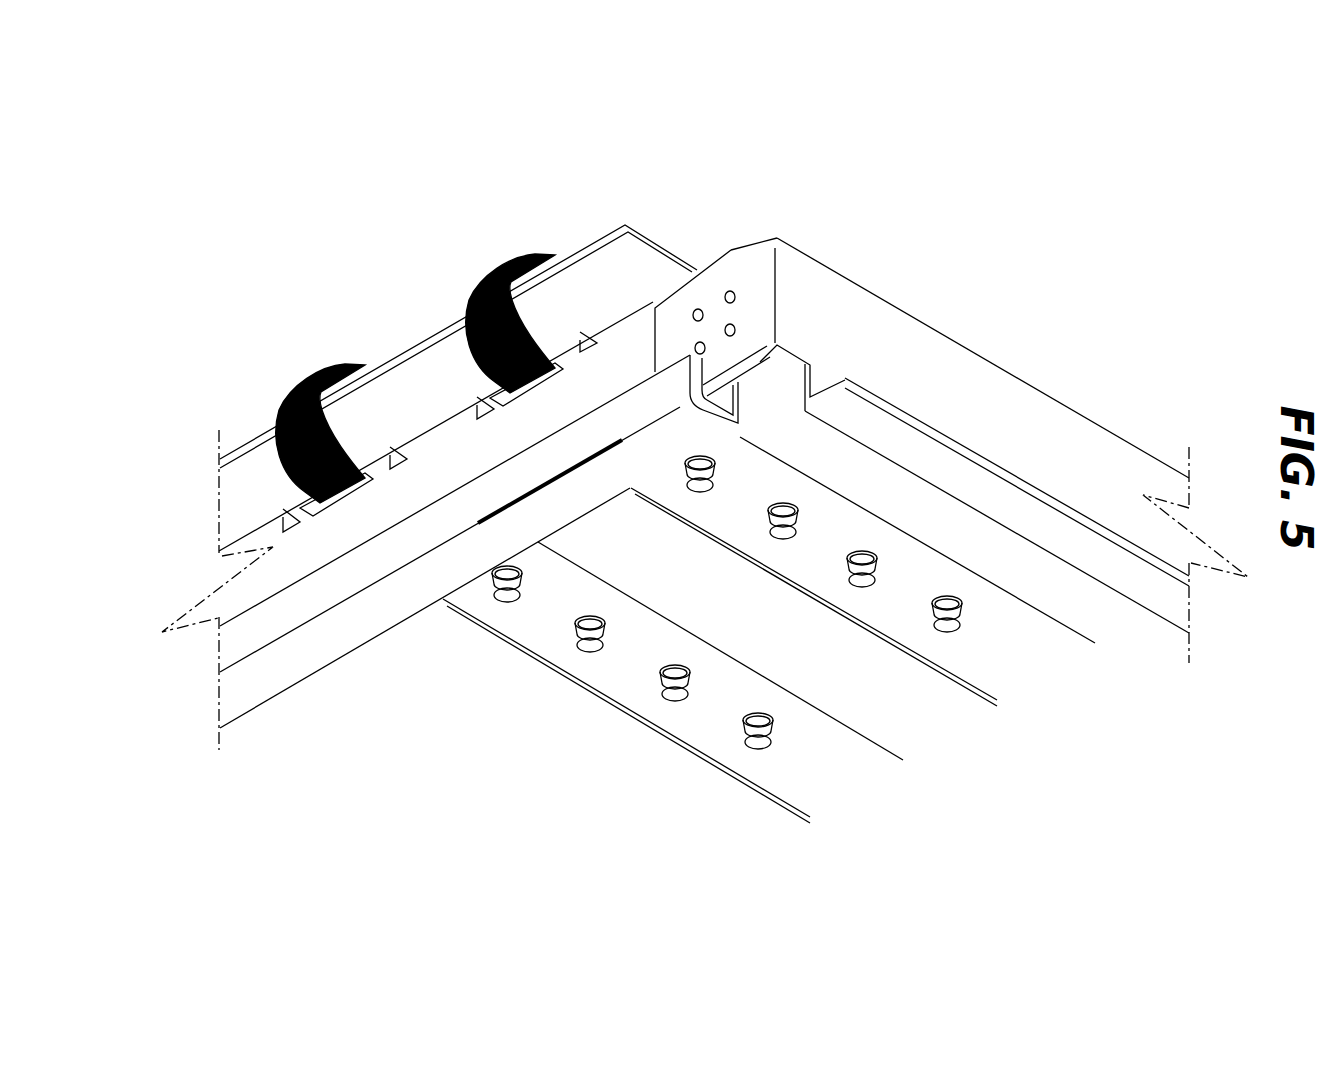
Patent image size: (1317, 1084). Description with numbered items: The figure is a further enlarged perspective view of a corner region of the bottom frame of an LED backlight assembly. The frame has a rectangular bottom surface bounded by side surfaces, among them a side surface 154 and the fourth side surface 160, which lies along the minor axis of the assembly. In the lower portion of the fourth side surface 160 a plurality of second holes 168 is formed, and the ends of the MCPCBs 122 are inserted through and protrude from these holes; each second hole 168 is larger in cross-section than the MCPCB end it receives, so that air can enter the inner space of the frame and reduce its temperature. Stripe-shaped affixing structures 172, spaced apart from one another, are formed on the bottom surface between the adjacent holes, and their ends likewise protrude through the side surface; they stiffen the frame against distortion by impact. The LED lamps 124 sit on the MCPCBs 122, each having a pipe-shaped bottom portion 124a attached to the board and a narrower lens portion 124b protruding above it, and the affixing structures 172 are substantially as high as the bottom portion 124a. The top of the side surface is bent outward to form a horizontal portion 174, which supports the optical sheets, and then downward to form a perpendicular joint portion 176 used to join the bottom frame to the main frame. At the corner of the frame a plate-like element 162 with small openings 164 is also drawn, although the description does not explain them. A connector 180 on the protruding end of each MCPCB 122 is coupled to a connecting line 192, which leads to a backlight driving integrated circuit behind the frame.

The MCPCB 122 is at (1027, 660).
The LED lamp 124 is at (739, 615).
The bottom portion 124a is at (945, 612).
The lens portion 124b is at (950, 632).
The side surface 154 is at (985, 380).
The fourth side surface 160 is at (280, 572).
The corner bracket 162 is at (758, 265).
The bracket holes 164 is at (730, 330).
The second hole 168 is at (590, 340).
The affixing structure 172 is at (748, 645).
The horizontal portion 174 is at (308, 658).
The joint portion 176 is at (237, 642).
The connector 180 is at (490, 390).
The connecting line 192 is at (480, 280).